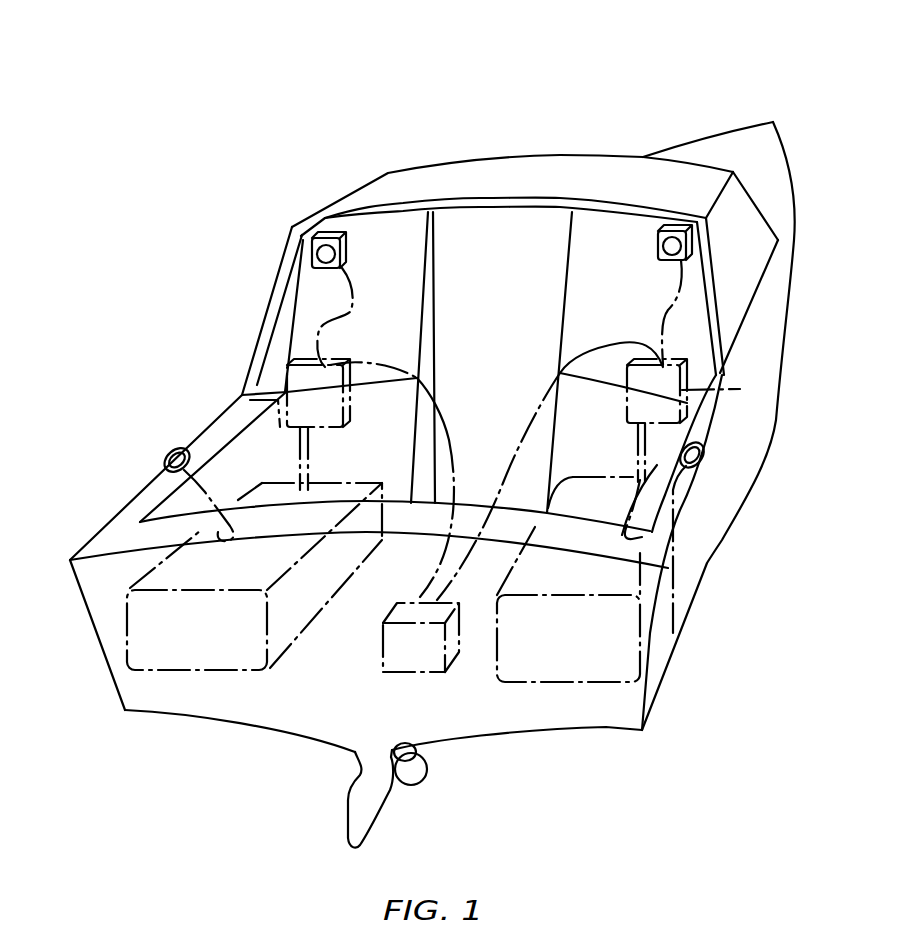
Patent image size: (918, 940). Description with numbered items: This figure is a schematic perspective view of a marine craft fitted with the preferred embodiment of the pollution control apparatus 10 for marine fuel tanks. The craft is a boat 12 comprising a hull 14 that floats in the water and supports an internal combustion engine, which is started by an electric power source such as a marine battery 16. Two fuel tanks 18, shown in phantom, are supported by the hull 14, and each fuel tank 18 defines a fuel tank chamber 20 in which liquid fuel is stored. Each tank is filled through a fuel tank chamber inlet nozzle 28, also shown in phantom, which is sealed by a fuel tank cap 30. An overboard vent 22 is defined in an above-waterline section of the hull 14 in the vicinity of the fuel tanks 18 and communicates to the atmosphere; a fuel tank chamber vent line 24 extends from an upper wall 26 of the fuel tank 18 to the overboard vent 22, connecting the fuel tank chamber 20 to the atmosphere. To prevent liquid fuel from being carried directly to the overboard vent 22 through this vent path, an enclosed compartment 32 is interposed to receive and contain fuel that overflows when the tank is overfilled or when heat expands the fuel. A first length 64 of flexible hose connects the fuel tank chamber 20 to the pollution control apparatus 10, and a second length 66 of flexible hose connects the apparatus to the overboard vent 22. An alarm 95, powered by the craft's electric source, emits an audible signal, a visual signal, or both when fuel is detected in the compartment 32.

The pollution control apparatus 10 is at (176, 357).
The boat 12 is at (552, 99).
The hull 14 is at (708, 530).
The marine battery 16 is at (383, 657).
The fuel tank 18 is at (125, 632).
The fuel tank chamber 20 is at (233, 650).
The overboard vent 22 is at (243, 395).
The fuel tank chamber vent line 24 is at (637, 448).
The upper wall 26 is at (580, 477).
The fuel tank chamber inlet nozzle 28 is at (224, 502).
The fuel tank cap 30 is at (164, 462).
The enclosed compartment 32 is at (327, 367).
The first length of flexible hose 64 is at (309, 442).
The second length of flexible hose 66 is at (279, 458).
The alarm 95 is at (323, 232).